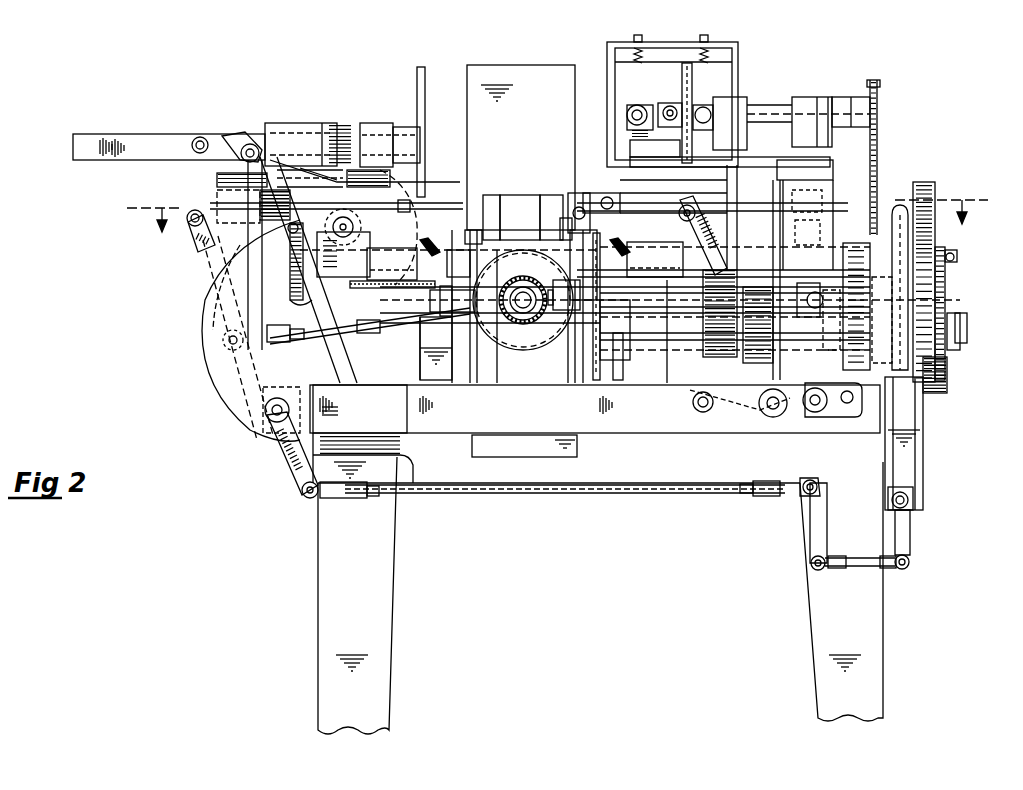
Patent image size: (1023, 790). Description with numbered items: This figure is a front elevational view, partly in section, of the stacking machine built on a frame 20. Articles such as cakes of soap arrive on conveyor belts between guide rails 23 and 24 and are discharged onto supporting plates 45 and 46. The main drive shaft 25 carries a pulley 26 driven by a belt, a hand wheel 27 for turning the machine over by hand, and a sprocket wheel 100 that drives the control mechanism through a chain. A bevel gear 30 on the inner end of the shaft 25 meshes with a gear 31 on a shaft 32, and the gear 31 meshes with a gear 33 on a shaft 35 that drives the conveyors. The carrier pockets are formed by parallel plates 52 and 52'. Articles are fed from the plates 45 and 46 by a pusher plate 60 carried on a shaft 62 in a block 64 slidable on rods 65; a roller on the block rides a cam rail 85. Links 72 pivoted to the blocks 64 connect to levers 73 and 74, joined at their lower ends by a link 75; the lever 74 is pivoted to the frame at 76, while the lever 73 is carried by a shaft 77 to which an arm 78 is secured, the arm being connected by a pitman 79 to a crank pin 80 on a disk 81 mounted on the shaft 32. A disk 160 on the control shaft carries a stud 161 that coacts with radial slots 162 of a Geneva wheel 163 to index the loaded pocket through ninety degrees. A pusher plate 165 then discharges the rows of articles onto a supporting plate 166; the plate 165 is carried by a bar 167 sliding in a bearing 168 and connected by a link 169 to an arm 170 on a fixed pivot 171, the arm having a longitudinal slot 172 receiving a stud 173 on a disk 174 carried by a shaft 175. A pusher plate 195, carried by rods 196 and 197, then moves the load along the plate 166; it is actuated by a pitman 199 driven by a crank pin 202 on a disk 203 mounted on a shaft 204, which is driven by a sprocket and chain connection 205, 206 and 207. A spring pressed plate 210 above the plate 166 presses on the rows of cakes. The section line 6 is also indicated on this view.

The link 169 is at (223, 140).
The bar 167 is at (250, 140).
The bearing 168 is at (307, 124).
The shaft 175 is at (361, 130).
The pusher plate 165 is at (425, 72).
The disk 174 is at (387, 187).
The rods 65 is at (428, 204).
The cam rail 85 is at (367, 233).
The shaft 35 is at (430, 250).
The supporting plate 46 is at (386, 262).
The guide rail 23 is at (385, 286).
The guide rail 24 is at (423, 317).
The pitman 79 is at (370, 327).
The gear 33 is at (507, 240).
The gear 31 is at (524, 285).
The shaft 62 is at (577, 220).
The block 64 is at (590, 200).
The link 72 is at (197, 210).
The supporting plate 166 is at (727, 203).
The lever 74 is at (713, 248).
The pulley 26 is at (773, 243).
The supporting plate 45 is at (636, 272).
The bevel gear 30 is at (524, 315).
The shaft 32 is at (503, 317).
The crank pin 80 is at (497, 323).
The disk 81 is at (547, 323).
The sprocket wheel 100 is at (603, 373).
The frame 20 is at (612, 428).
The fixed pivot 171 is at (377, 385).
The pivot 76 is at (773, 410).
The link 75 is at (608, 493).
The spring pressed plate 210 is at (905, 458).
The disk 160 is at (947, 385).
The sprocket and chain connection 207 is at (910, 360).
The hand wheel 27 is at (930, 303).
The main drive shaft 25 is at (910, 293).
The stud 161 is at (953, 247).
The radial slots 162 is at (932, 250).
The Geneva wheel 163 is at (920, 182).
The sprocket and chain connection 206 is at (878, 165).
The shaft 204 is at (878, 112).
The sprocket and chain connection 205 is at (878, 92).
The rod 197 is at (750, 110).
The pusher plate 195 is at (733, 85).
The disk 203 is at (695, 85).
The pitman 199 is at (697, 42).
The crank pin 202 is at (646, 50).
The rod 196 is at (637, 105).
The plate 52 is at (521, 147).
The plate 52' is at (524, 446).
The section line 6 is at (557, 206).
The lever 73 is at (200, 247).
The stud 173 is at (267, 253).
The pusher plate 60 is at (270, 273).
The longitudinal slot 172 is at (290, 300).
The arm 78 is at (230, 360).
The arm 170 is at (263, 397).
The shaft 77 is at (277, 420).